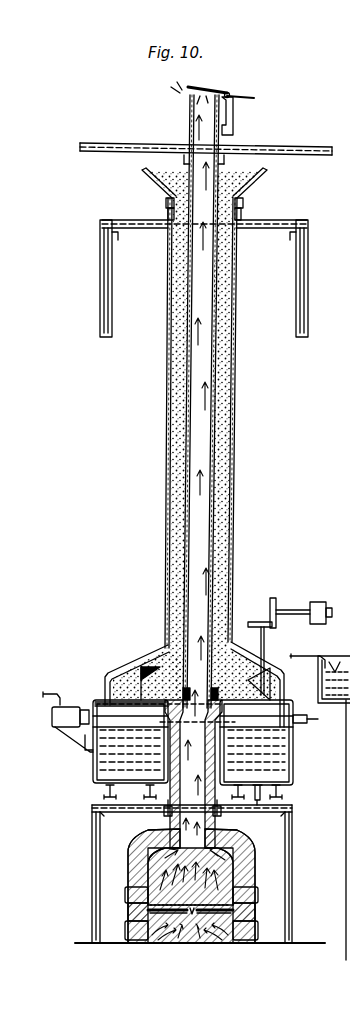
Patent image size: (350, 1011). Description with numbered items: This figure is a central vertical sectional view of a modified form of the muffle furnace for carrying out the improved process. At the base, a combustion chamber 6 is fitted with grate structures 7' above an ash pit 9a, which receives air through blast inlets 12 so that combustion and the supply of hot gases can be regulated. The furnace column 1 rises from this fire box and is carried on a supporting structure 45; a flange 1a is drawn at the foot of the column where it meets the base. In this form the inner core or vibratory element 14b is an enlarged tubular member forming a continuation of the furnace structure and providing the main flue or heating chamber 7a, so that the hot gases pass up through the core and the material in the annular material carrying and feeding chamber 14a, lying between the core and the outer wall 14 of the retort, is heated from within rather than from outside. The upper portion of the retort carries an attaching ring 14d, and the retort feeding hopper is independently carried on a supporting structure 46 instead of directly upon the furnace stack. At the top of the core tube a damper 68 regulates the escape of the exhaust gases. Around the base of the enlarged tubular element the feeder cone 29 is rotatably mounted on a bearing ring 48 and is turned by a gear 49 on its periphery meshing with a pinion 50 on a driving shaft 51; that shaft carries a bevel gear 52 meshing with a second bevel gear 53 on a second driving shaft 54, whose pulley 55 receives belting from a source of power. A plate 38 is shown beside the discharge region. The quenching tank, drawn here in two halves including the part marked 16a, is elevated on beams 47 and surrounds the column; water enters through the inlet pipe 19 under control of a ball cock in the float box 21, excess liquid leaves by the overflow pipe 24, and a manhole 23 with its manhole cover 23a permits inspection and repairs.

The damper 68 is at (213, 93).
The main flue or heating chamber 7a is at (200, 367).
The attaching ring 14d is at (243, 222).
The supporting structure 46 is at (112, 257).
The outer wall 14 is at (167, 455).
The annular material carrying and feeding chamber 14a is at (225, 497).
The central core or vibratory element 14b is at (220, 532).
The feeder cone 29 is at (160, 666).
The plate 38 is at (118, 672).
The bearing ring 48 is at (146, 696).
The pinion 50 is at (270, 680).
The gear 49 is at (258, 672).
The bevel gear 52 is at (254, 622).
The second bevel gear 53 is at (273, 600).
The driving shaft 51 is at (261, 640).
The second driving shaft 54 is at (290, 614).
The pulley 55 is at (318, 602).
The inlet pipe 19 is at (305, 656).
The float box or tank 21 is at (60, 716).
The liquid tank 16a is at (228, 752).
The overflow connection or pipe 24 is at (305, 724).
The furnace structure or column 1 is at (206, 735).
The flange 1a is at (168, 822).
The beams 47 is at (152, 797).
The supporting structure 45 is at (92, 836).
The combustion chamber 6 is at (191, 886).
The ash pit 9a is at (190, 922).
The blast inlet 12 is at (128, 935).
The grate structure 7' is at (185, 946).
The manhole 23 is at (349, 848).
The manhole cover 23a is at (334, 895).